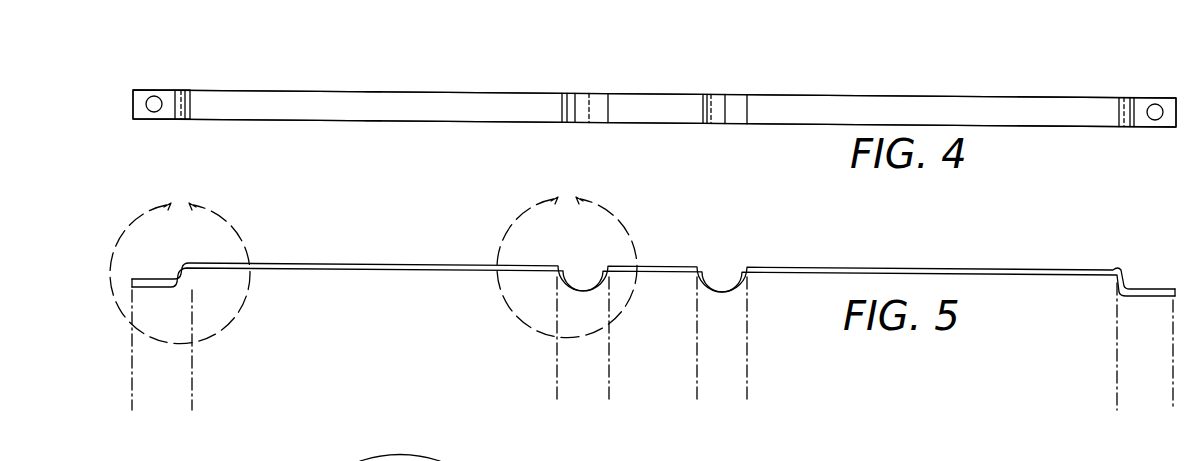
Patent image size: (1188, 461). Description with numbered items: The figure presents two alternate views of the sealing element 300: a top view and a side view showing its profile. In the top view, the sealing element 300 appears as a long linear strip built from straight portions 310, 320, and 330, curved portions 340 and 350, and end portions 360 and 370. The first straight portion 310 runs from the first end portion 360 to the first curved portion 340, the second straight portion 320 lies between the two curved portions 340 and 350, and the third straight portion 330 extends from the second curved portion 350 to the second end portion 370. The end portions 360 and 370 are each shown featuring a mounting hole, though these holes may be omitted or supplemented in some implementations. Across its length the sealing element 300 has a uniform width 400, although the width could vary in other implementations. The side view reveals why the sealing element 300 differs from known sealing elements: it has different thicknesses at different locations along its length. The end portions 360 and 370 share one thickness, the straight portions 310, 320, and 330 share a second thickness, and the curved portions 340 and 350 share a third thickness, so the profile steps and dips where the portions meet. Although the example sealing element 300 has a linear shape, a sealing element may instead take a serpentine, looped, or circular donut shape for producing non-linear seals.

In FIG. 4, the sealing element 300 is at (849, 61).
In FIG. 5, the sealing element 300 is at (850, 247).
In FIG. 4, the straight portion 310 is at (265, 90).
In FIG. 4, the straight portion 320 is at (662, 93).
In FIG. 4, the straight portion 330 is at (944, 97).
In FIG. 4, the curved portion 340 is at (586, 92).
In FIG. 4, the curved portion 350 is at (731, 94).
In FIG. 4, the end portion 360 is at (142, 96).
In FIG. 4, the end portion 370 is at (1153, 100).
In FIG. 4, the width 400 is at (373, 157).